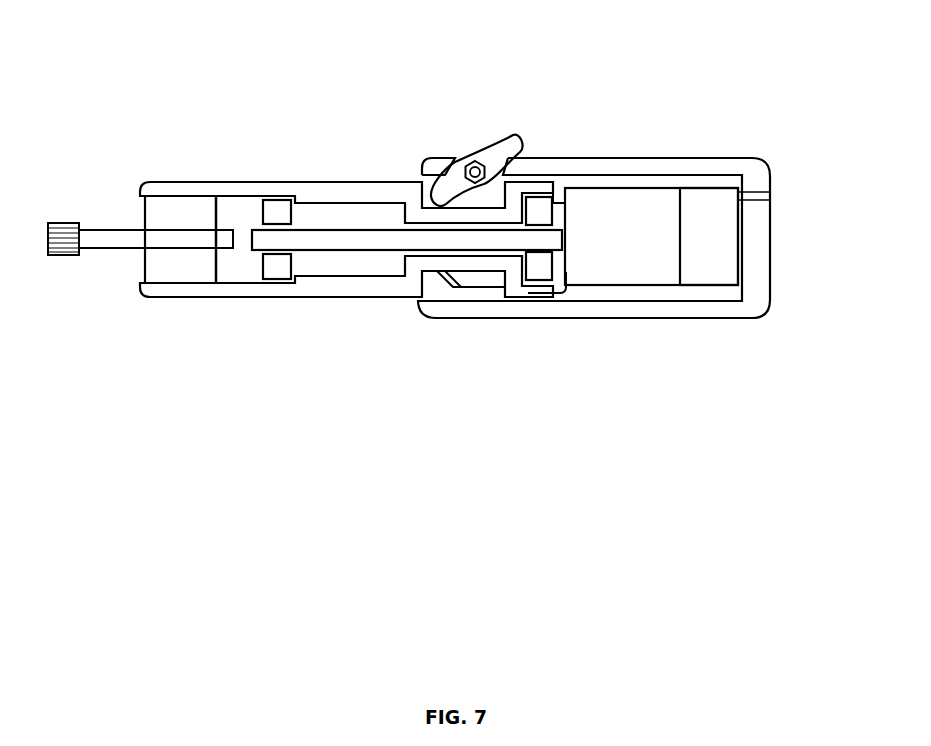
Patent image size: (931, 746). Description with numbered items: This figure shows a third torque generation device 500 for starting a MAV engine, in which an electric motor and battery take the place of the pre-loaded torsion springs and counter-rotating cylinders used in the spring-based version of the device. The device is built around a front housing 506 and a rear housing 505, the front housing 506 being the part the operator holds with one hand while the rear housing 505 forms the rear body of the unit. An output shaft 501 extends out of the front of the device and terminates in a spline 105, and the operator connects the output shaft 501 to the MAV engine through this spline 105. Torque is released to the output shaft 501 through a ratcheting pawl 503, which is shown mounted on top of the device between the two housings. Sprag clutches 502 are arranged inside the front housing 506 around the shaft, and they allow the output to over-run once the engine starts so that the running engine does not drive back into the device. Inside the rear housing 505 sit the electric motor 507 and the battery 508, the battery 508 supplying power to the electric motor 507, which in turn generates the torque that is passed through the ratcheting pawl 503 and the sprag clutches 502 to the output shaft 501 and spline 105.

The liquid dispensing assembly 500 is at (812, 148).
The spline 105 is at (65, 252).
The output shaft 501 is at (126, 238).
The sprag clutches 502 is at (188, 267).
The ratcheting pawl 503 is at (471, 160).
The rear housing 505 is at (595, 166).
The front housing 506 is at (328, 287).
The electric motor 507 is at (648, 287).
The battery 508 is at (705, 287).